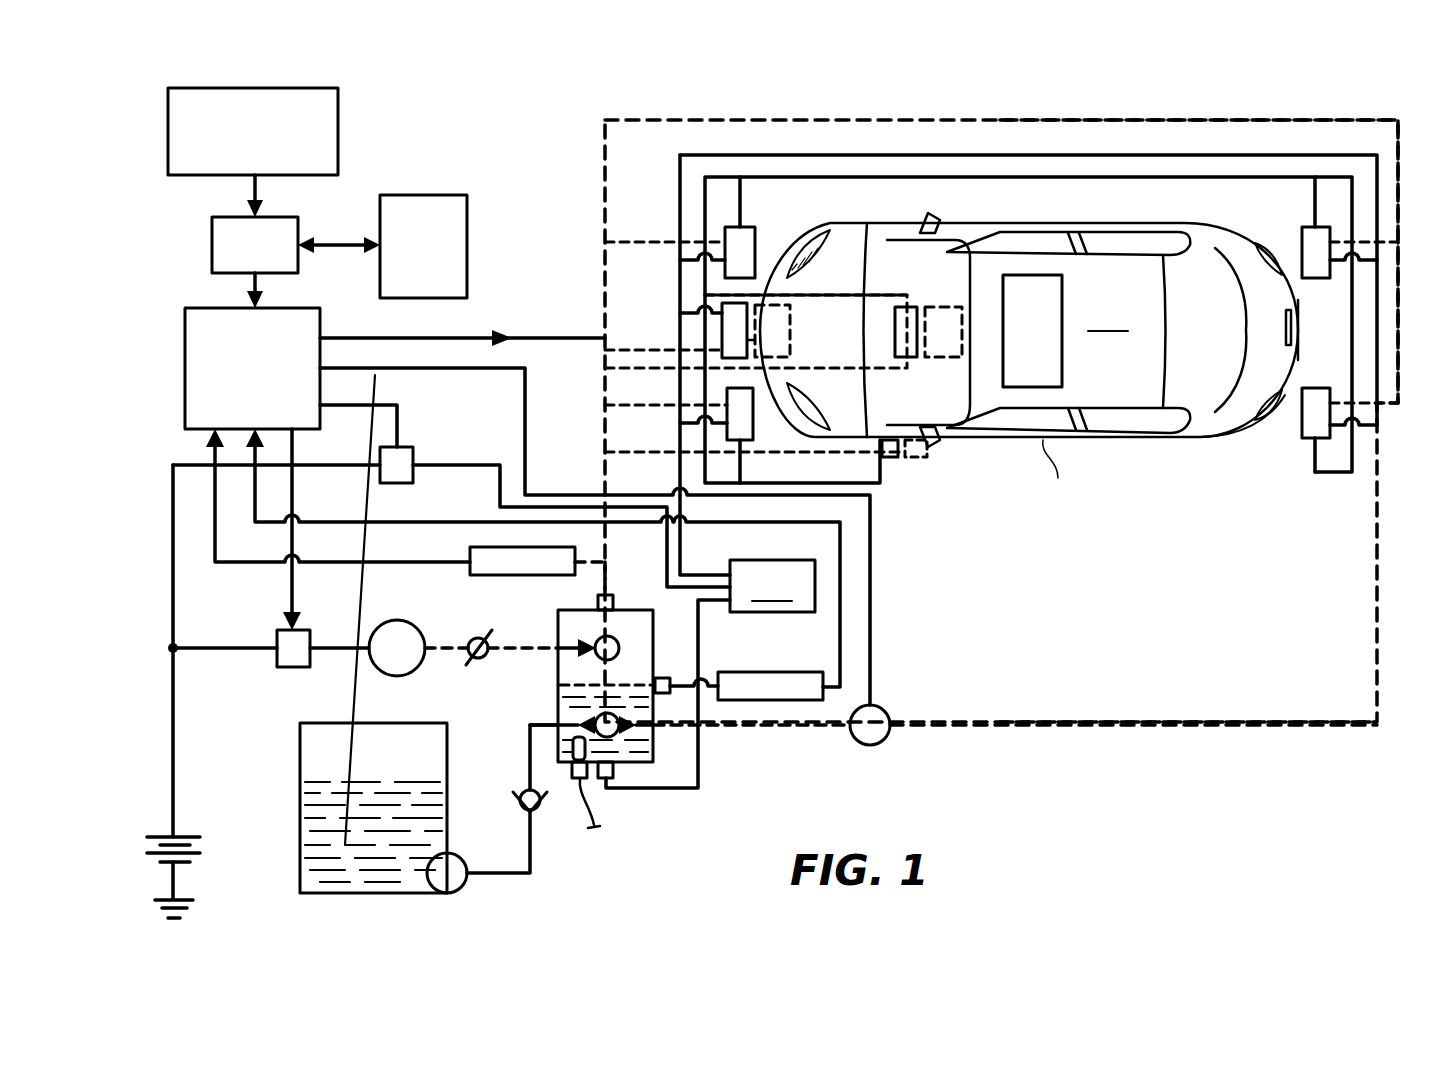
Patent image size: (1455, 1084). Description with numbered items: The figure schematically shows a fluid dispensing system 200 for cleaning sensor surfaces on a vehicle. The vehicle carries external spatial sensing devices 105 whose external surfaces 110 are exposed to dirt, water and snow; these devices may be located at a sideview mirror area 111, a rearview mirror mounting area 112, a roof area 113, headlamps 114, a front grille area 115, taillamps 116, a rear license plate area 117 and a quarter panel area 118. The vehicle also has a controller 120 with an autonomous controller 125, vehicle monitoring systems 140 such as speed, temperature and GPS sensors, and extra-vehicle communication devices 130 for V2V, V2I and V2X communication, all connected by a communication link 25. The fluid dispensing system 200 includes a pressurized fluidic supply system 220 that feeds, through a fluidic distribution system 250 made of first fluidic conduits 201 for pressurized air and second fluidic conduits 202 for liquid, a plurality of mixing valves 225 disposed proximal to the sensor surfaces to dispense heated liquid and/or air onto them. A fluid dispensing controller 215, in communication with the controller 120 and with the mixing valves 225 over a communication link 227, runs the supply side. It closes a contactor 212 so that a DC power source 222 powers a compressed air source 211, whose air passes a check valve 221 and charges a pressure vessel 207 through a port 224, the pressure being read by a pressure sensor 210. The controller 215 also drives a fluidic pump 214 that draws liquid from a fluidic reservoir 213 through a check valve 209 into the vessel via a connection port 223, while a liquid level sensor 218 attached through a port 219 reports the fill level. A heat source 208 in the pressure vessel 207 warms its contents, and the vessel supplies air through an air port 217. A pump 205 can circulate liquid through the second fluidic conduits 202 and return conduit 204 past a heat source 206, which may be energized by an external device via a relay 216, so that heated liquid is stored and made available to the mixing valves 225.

The communication link 25 is at (258, 187).
The external spatial sensing devices 105 is at (933, 375).
The external surfaces 110 is at (933, 375).
The sideview mirror area 111 is at (918, 475).
The rearview mirror mounting area 112 is at (950, 335).
The roof area 113 is at (1029, 330).
The headlamps 114 is at (783, 240).
The front grille area 115 is at (745, 322).
The taillamps 116 is at (1268, 440).
The rear license plate area 117 is at (1300, 335).
The quarter panel area 118 is at (1226, 440).
The controller 120 is at (188, 232).
The autonomous controller 125 is at (212, 226).
The extra-vehicle communication devices 130 is at (467, 225).
The vehicle monitoring systems 140 is at (338, 120).
The fluid dispensing system 200 is at (572, 140).
The first fluidic conduits 201 is at (1130, 120).
The second fluidic conduits 202 is at (1265, 155).
The second fluidic conduit 204 is at (1130, 722).
The pump 205 is at (882, 708).
The heat source 206 is at (710, 674).
The pressure vessel 207 is at (597, 608).
The heat source 208 is at (575, 750).
The check valve 209 is at (540, 812).
The pressure sensor 210 is at (470, 556).
The compressed air source 211 is at (383, 672).
The contactor 212 is at (277, 640).
The fluidic reservoir 213 is at (300, 812).
The fluidic pump 214 is at (460, 890).
The fluid dispensing controller 215 is at (212, 308).
The relay 216 is at (413, 455).
The air port 217 is at (612, 603).
The liquid level sensor 218 is at (785, 672).
The port 219 is at (663, 678).
The pressurized fluidic supply system 220 is at (662, 815).
The check valve 221 is at (475, 638).
The DC power source 222 is at (200, 848).
The connection port 223 is at (596, 718).
The port 224 is at (598, 656).
The mixing valves 225 is at (737, 250).
The communication link 227 is at (1158, 178).
The fluidic distribution system 250 is at (598, 325).